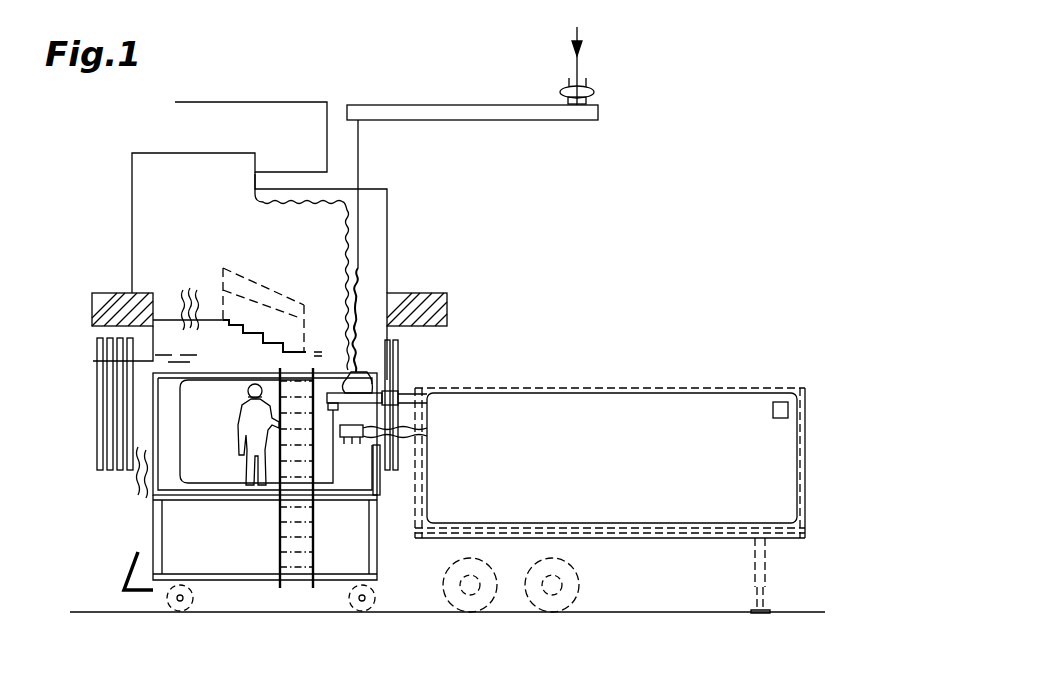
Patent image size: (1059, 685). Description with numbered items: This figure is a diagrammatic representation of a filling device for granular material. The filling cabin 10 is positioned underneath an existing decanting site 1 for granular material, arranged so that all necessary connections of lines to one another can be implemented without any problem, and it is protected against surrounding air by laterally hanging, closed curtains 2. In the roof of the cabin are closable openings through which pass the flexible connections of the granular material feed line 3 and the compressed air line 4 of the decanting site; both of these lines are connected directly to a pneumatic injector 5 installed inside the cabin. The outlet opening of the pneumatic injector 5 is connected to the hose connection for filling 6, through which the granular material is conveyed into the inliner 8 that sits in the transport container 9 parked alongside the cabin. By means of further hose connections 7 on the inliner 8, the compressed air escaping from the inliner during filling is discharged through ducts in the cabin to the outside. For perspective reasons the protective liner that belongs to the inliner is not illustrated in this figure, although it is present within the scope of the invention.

The decanting site 1 is at (388, 220).
The curtains 2 is at (103, 410).
The granular material feed line 3 is at (358, 288).
The compressed air line 4 is at (346, 292).
The pneumatic injector 5 is at (343, 362).
The hose connection for filling 6 is at (422, 386).
The further hose connections 7 is at (366, 433).
The inliner 8 is at (570, 393).
The transport container 9 is at (670, 540).
The filling cabin 10 is at (153, 430).